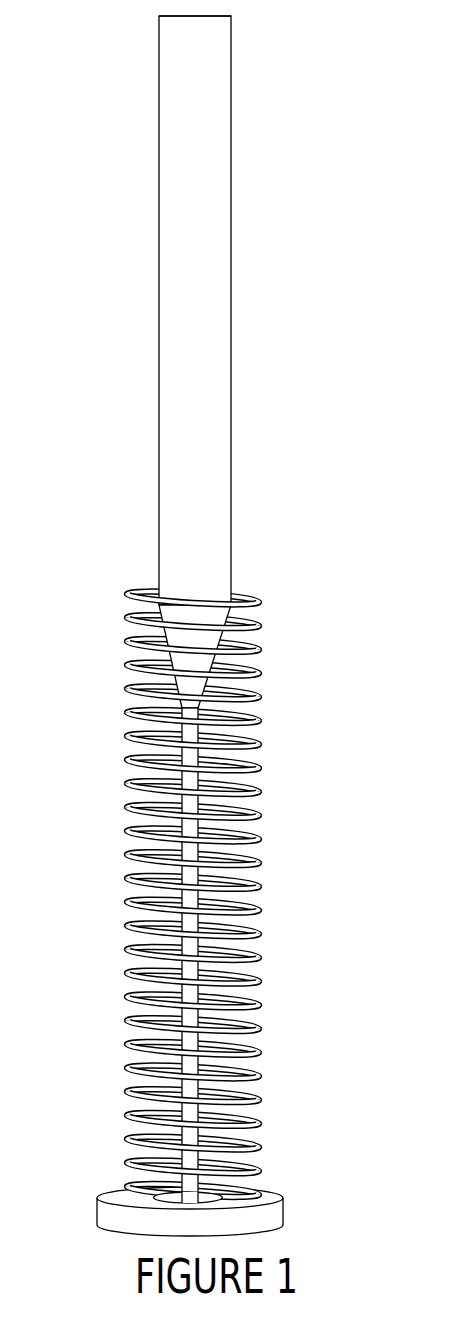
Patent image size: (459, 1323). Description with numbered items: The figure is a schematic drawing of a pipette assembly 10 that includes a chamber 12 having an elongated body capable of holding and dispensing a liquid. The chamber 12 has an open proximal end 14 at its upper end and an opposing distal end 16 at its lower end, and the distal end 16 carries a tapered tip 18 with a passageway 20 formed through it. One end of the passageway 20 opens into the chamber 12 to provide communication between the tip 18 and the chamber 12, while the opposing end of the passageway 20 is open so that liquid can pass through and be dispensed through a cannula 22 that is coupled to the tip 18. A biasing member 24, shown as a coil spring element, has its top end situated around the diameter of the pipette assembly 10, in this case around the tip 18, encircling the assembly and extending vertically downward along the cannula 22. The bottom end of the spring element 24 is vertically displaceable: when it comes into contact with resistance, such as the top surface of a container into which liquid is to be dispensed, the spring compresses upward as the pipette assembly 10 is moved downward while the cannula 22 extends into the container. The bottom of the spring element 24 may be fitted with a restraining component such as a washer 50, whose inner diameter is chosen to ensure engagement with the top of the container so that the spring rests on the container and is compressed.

The pipette assembly 10 is at (335, 21).
The chamber 12 is at (158, 310).
The open proximal end 14 is at (142, 32).
The distal end 16 is at (88, 585).
The tapered tip 18 is at (78, 592).
The passageway 20 is at (202, 646).
The cannula 22 is at (86, 948).
The biasing member 24 is at (242, 1084).
The base weight 50 is at (98, 1191).